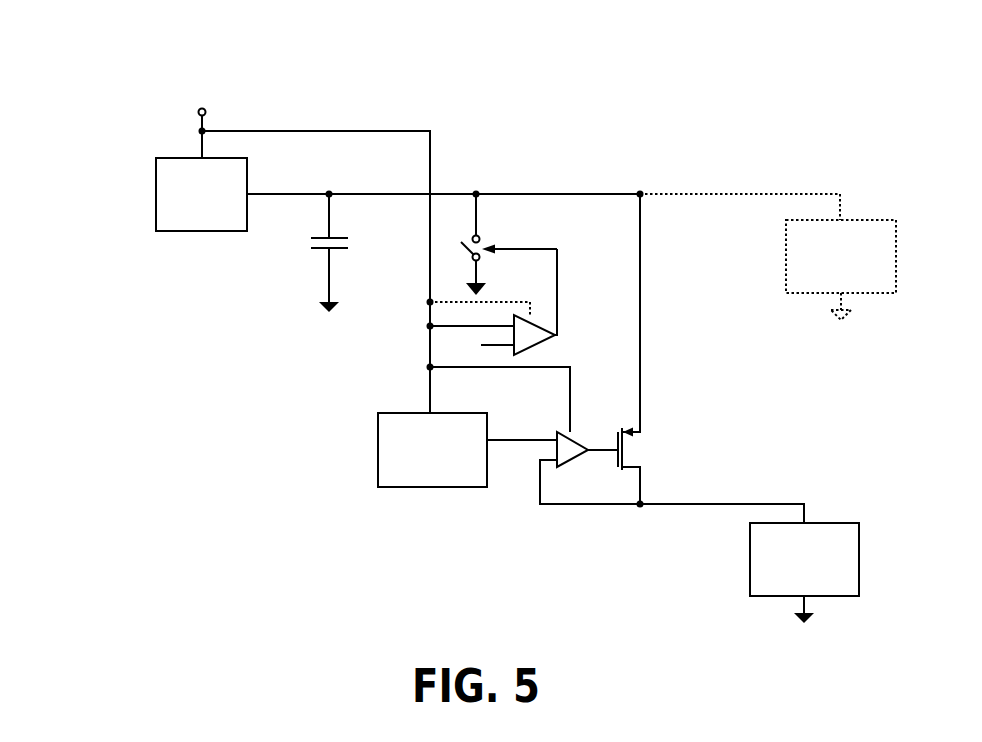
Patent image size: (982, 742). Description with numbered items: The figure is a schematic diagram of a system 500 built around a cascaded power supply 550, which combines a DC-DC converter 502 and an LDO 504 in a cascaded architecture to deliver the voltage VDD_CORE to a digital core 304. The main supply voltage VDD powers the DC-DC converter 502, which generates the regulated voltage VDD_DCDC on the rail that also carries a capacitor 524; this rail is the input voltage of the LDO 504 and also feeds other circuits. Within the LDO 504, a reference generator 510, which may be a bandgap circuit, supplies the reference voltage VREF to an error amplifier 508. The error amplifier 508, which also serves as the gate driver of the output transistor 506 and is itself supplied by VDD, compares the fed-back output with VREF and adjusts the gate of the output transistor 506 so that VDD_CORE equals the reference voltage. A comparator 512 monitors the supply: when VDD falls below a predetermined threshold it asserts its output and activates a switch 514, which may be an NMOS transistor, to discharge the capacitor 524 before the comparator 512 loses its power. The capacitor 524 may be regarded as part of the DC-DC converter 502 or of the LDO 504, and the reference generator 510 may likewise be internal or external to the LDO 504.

The system 500 is at (104, 54).
The DC-DC converter 502 is at (217, 162).
The capacitor 524 is at (340, 240).
The switch 514 is at (484, 242).
The comparator 512 is at (538, 338).
The LDO 504 is at (696, 369).
The reference generator 510 is at (447, 413).
The error amplifier 508 is at (571, 462).
The output transistor 506 is at (625, 461).
The digital core 304 is at (827, 523).
The cascaded power supply 550 is at (715, 133).